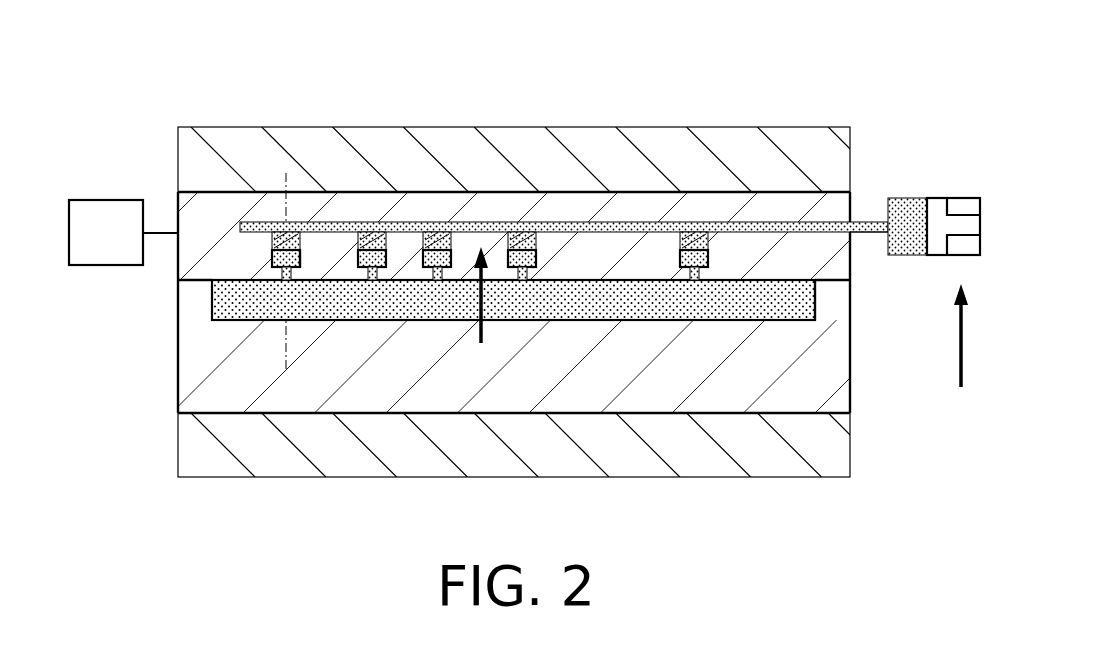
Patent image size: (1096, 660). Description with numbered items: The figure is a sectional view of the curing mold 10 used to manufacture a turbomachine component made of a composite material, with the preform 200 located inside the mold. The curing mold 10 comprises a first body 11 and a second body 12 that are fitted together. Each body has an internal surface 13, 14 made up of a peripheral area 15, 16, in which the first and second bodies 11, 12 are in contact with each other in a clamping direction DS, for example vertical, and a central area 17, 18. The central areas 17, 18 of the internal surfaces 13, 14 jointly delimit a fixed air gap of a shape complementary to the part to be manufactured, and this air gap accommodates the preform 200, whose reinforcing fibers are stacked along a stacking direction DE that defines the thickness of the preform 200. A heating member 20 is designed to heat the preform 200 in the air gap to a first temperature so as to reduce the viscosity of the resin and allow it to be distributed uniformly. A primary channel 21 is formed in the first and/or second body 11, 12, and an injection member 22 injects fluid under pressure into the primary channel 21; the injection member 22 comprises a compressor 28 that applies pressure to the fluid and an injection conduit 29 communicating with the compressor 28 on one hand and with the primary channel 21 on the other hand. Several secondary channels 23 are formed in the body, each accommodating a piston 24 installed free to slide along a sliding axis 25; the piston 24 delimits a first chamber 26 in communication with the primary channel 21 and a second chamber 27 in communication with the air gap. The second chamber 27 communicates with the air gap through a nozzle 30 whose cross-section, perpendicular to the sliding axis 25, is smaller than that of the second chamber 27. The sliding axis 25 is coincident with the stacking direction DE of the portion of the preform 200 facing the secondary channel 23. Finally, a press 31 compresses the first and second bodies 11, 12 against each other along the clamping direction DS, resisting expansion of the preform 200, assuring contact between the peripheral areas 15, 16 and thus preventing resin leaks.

The curing mold 10 is at (201, 99).
The first body 11 is at (507, 207).
The second body 12 is at (607, 395).
The internal surface 13 is at (750, 272).
The internal surface 14 is at (715, 330).
The peripheral area 15 is at (830, 282).
The peripheral area 16 is at (824, 279).
The central area 17 is at (581, 286).
The central area 18 is at (614, 317).
The heating member 20 is at (123, 232).
The primary channel 21 is at (670, 212).
The injection member 22 is at (934, 134).
The secondary channel 23 is at (261, 194).
The piston 24 is at (298, 161).
The sliding axis 25 is at (286, 363).
The first chamber 26 is at (277, 236).
The second chamber 27 is at (301, 256).
The compressor 28 is at (917, 198).
The injection conduit 29 is at (868, 232).
The nozzle 30 is at (282, 274).
The press 31 is at (540, 302).
The preform 200 is at (377, 321).
The stacking direction DE is at (480, 344).
The clamping direction DS is at (942, 335).